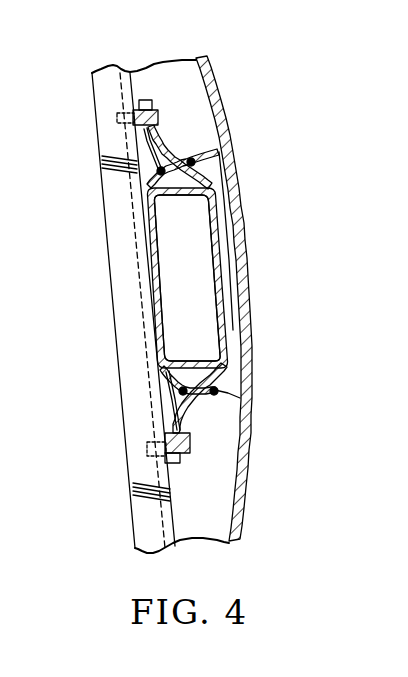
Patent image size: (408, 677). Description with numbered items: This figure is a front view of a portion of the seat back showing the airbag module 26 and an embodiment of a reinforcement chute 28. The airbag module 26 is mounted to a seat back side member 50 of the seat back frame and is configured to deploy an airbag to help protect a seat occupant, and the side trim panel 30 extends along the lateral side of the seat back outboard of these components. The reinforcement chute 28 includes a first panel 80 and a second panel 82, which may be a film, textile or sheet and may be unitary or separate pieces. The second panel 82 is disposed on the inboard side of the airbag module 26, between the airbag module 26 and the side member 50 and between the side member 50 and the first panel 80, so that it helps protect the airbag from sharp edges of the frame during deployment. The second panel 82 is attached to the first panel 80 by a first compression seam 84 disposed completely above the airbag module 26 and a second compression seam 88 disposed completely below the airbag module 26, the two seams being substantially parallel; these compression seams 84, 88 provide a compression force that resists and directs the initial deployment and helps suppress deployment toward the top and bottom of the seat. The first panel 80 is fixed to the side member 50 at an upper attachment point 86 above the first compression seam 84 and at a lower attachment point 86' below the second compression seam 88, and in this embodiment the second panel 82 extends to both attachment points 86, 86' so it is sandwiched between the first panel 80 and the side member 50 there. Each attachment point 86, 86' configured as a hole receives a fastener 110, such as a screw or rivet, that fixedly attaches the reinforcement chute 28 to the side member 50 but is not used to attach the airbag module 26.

The seat back side member 50 is at (108, 320).
The reinforcement chute 28 is at (143, 100).
The fastener 110 is at (160, 112).
The upper attachment point 86 is at (86, 140).
The lower attachment point 86' is at (113, 472).
The first compression seam 84 is at (192, 162).
The second compression seam 88 is at (216, 390).
The side trim panel 30 is at (243, 203).
The first panel 80 is at (234, 279).
The airbag module 26 is at (197, 283).
The second panel 82 is at (153, 330).